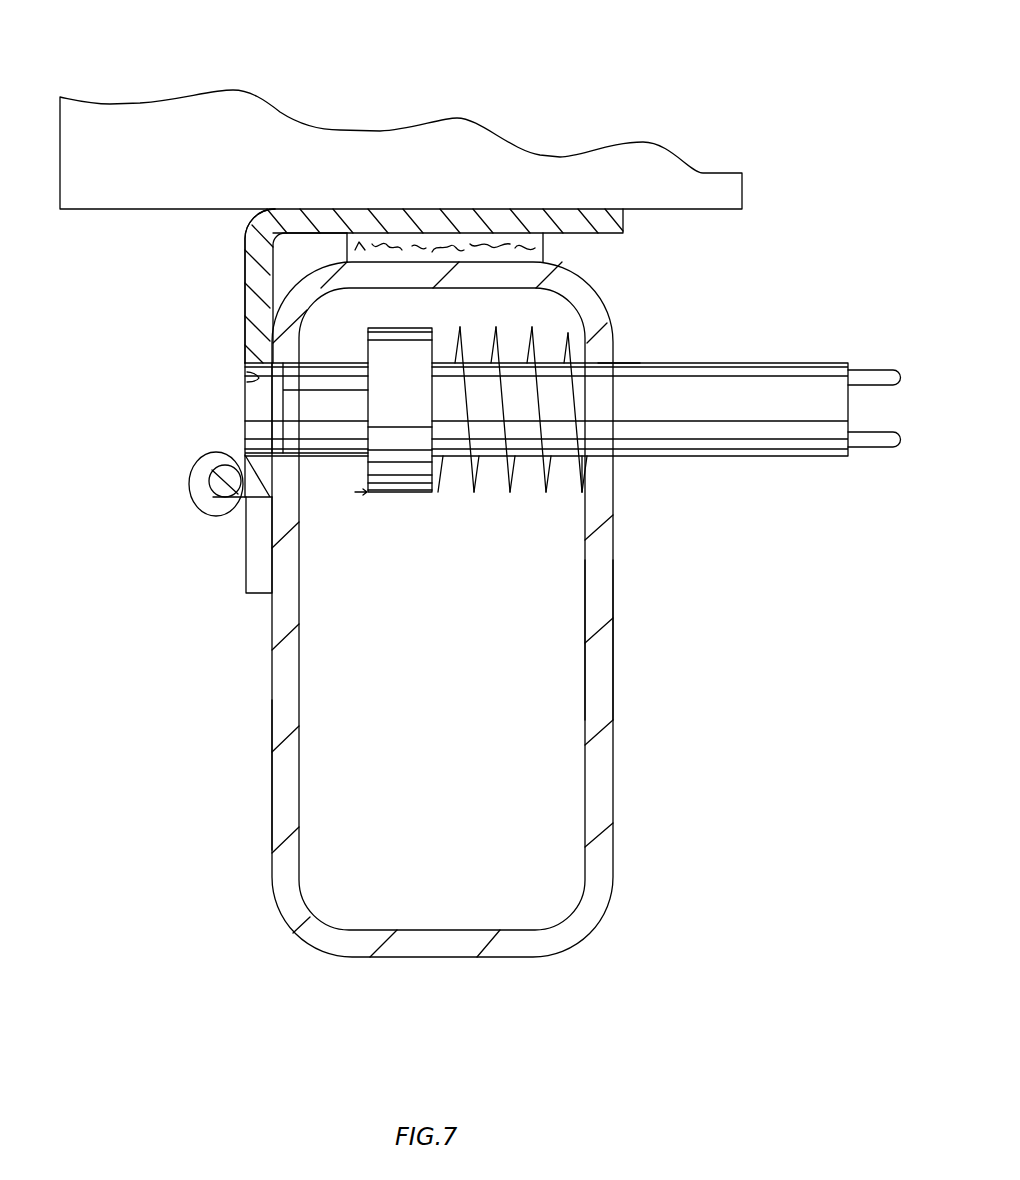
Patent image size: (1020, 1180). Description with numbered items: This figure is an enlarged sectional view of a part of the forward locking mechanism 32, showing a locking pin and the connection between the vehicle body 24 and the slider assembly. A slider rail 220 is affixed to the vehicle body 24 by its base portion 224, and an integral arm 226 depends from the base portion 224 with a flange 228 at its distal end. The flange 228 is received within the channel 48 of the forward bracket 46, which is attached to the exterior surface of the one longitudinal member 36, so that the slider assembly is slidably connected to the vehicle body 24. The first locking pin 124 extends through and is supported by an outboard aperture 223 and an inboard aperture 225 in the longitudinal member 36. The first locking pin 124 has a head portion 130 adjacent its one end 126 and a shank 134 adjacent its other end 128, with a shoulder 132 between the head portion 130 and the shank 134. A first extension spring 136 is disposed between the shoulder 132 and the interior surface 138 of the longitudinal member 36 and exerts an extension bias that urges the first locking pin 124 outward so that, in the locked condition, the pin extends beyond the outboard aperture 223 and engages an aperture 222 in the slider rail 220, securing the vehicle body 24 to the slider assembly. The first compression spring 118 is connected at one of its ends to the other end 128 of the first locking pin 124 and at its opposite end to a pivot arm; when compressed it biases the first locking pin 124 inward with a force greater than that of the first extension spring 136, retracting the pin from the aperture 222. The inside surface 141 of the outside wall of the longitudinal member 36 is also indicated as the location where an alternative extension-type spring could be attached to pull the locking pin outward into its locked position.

The vehicle body 24 is at (197, 113).
The forward locking mechanism 32 is at (807, 207).
The one longitudinal member 36 is at (270, 727).
The forward bracket 46 is at (243, 557).
The channel 48 is at (213, 481).
The first compression spring 118 is at (878, 373).
The first locking pin 124 is at (750, 360).
The one end 126 is at (282, 407).
The other end 128 is at (848, 413).
The head portion 130 is at (317, 432).
The shoulder 132 is at (405, 452).
The shank 134 is at (662, 438).
The first extension spring 136 is at (527, 335).
The interior surface 138 is at (582, 667).
The inside surface 141 is at (316, 722).
The slider rail 220 is at (463, 207).
The aperture 222 is at (245, 380).
The outboard aperture 223 is at (272, 418).
The base portion 224 is at (607, 207).
The inboard aperture 225 is at (601, 369).
The arm 226 is at (245, 318).
The flange 228 is at (240, 463).